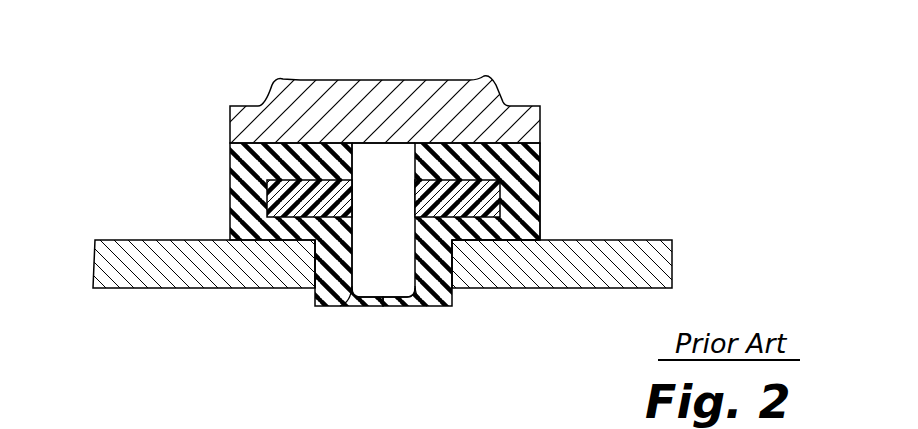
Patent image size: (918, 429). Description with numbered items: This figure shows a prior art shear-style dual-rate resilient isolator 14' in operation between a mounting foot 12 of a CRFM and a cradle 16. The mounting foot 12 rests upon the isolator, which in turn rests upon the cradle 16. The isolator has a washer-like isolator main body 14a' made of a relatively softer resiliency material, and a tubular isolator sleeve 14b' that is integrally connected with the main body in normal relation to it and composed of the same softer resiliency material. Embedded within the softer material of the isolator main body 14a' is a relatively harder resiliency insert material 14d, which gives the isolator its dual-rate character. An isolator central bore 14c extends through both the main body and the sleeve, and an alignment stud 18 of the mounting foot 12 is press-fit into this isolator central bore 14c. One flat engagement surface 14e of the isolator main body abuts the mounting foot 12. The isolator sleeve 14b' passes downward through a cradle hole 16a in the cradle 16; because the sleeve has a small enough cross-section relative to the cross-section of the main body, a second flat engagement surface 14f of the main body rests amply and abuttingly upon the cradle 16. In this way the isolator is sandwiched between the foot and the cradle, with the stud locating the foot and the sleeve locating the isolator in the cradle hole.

The mounting foot 12 is at (228, 107).
The shear-style dual-rate resilient isolator 14' is at (603, 191).
The isolator main body 14a' is at (234, 224).
The isolator sleeve 14b' is at (473, 251).
The isolator central bore 14c is at (355, 242).
The resiliency insert material 14d is at (490, 172).
The flat engagement surface 14e is at (468, 143).
The second flat engagement surface 14f is at (507, 243).
The cradle 16 is at (632, 240).
The cradle hole 16a is at (418, 283).
The alignment stud 18 is at (350, 265).